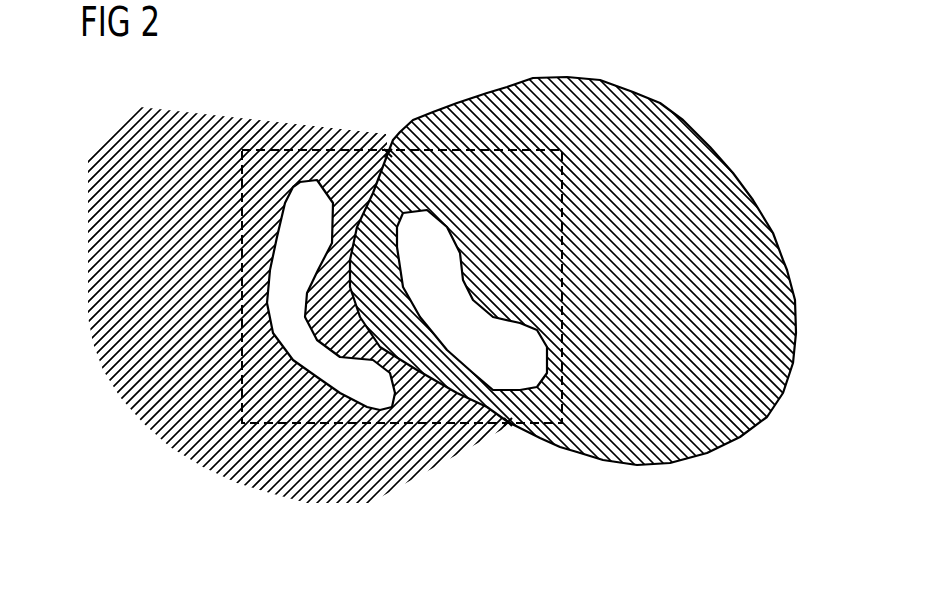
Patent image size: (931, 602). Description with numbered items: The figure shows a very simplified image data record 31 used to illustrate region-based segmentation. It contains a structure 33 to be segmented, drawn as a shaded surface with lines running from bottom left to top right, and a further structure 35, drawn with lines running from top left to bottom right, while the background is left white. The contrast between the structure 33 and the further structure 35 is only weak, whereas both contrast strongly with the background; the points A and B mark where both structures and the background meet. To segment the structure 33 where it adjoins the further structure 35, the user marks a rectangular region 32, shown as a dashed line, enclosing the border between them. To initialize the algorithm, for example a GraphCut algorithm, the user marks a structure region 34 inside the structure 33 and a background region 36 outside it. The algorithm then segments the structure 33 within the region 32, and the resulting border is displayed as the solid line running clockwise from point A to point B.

The image data record 31 is at (256, 78).
The rectangular region 32 is at (343, 150).
The structure 33 is at (679, 135).
The structure region 34 is at (520, 386).
The further structure 35 is at (97, 314).
The background region 36 is at (382, 408).